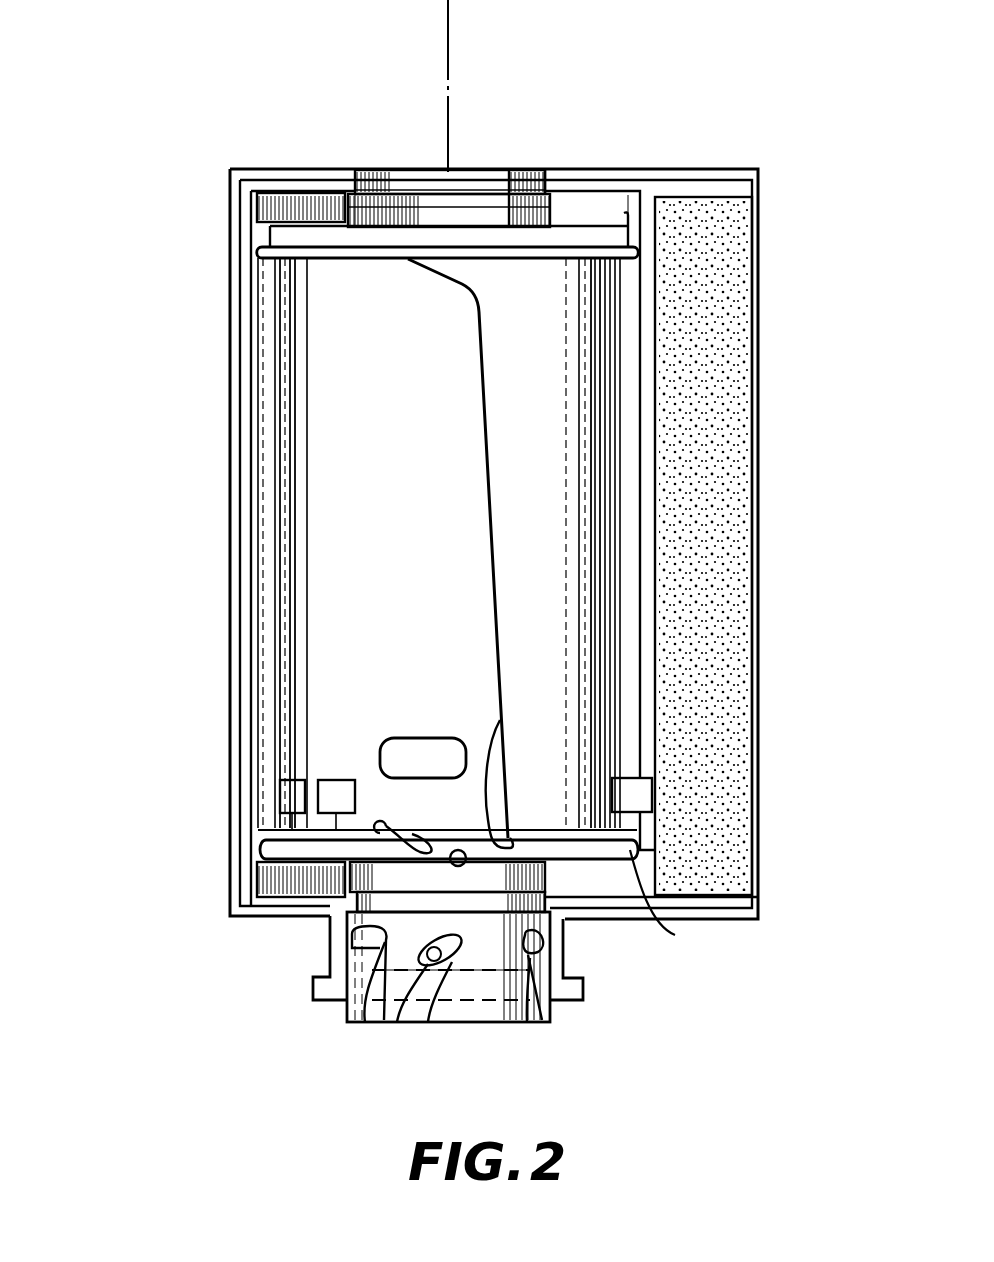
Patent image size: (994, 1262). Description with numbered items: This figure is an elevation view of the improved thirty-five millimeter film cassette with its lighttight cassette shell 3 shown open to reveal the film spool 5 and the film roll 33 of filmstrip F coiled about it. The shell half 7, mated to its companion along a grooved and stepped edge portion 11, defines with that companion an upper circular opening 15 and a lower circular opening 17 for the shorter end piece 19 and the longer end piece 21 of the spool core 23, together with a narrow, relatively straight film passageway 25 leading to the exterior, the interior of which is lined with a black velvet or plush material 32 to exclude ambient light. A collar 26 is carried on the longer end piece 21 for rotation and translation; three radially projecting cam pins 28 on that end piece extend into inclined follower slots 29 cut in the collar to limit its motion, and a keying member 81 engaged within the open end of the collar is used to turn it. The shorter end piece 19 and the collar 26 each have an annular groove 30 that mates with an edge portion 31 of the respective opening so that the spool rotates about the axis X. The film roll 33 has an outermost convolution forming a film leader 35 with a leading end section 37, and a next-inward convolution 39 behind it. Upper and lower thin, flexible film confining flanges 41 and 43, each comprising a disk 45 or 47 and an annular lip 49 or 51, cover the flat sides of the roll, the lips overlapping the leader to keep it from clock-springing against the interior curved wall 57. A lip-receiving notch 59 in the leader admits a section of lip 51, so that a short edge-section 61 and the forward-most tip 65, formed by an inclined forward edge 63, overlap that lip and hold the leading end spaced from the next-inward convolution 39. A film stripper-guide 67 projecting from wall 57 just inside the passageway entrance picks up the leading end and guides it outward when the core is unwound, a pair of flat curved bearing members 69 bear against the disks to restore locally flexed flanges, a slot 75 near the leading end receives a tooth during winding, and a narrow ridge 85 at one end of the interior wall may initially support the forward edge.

The cassette shell 3 is at (293, 165).
The film spool 5 is at (263, 624).
The shell half 7 is at (257, 160).
The grooved and stepped edge portion 11 is at (240, 306).
The upper circular opening 15 is at (528, 178).
The lower circular opening 17 is at (342, 1002).
The shorter end piece 19 is at (356, 180).
The longer end piece 21 is at (335, 976).
The spool core 23 is at (382, 166).
The film passageway 25 is at (752, 402).
The collar 26 is at (585, 1020).
The cam pin 28 is at (350, 944).
The follower slot 29 is at (380, 948).
The annular groove 30 is at (409, 176).
The edge portion of opening 31 is at (508, 176).
The black velvet or plush material 32 is at (705, 268).
The film roll 33 is at (263, 568).
The film leader 35 is at (287, 476).
The leading end section 37 is at (490, 590).
The next-inward convolution 39 is at (570, 490).
The upper film confining flange 41 is at (256, 240).
The lower film confining flange 43 is at (262, 852).
The disk of upper flange 45 is at (598, 227).
The disk of lower flange 47 is at (583, 866).
The annular lip of upper flange 49 is at (626, 208).
The annular lip of lower flange 51 is at (392, 846).
The interior curved wall 57 is at (266, 408).
The lip-receiving notch 59 is at (377, 826).
The edge-section of film leader 61 is at (458, 850).
The forward edge 63 is at (494, 480).
The forward-most tip 65 is at (498, 752).
The film stripper-guide 67 is at (615, 775).
The flat curved bearing member 69 is at (262, 204).
The slot 75 is at (422, 746).
The keying member 81 is at (488, 1000).
The narrow ridge 85 is at (645, 565).
The filmstrip F is at (290, 700).
The axis X is at (448, 48).